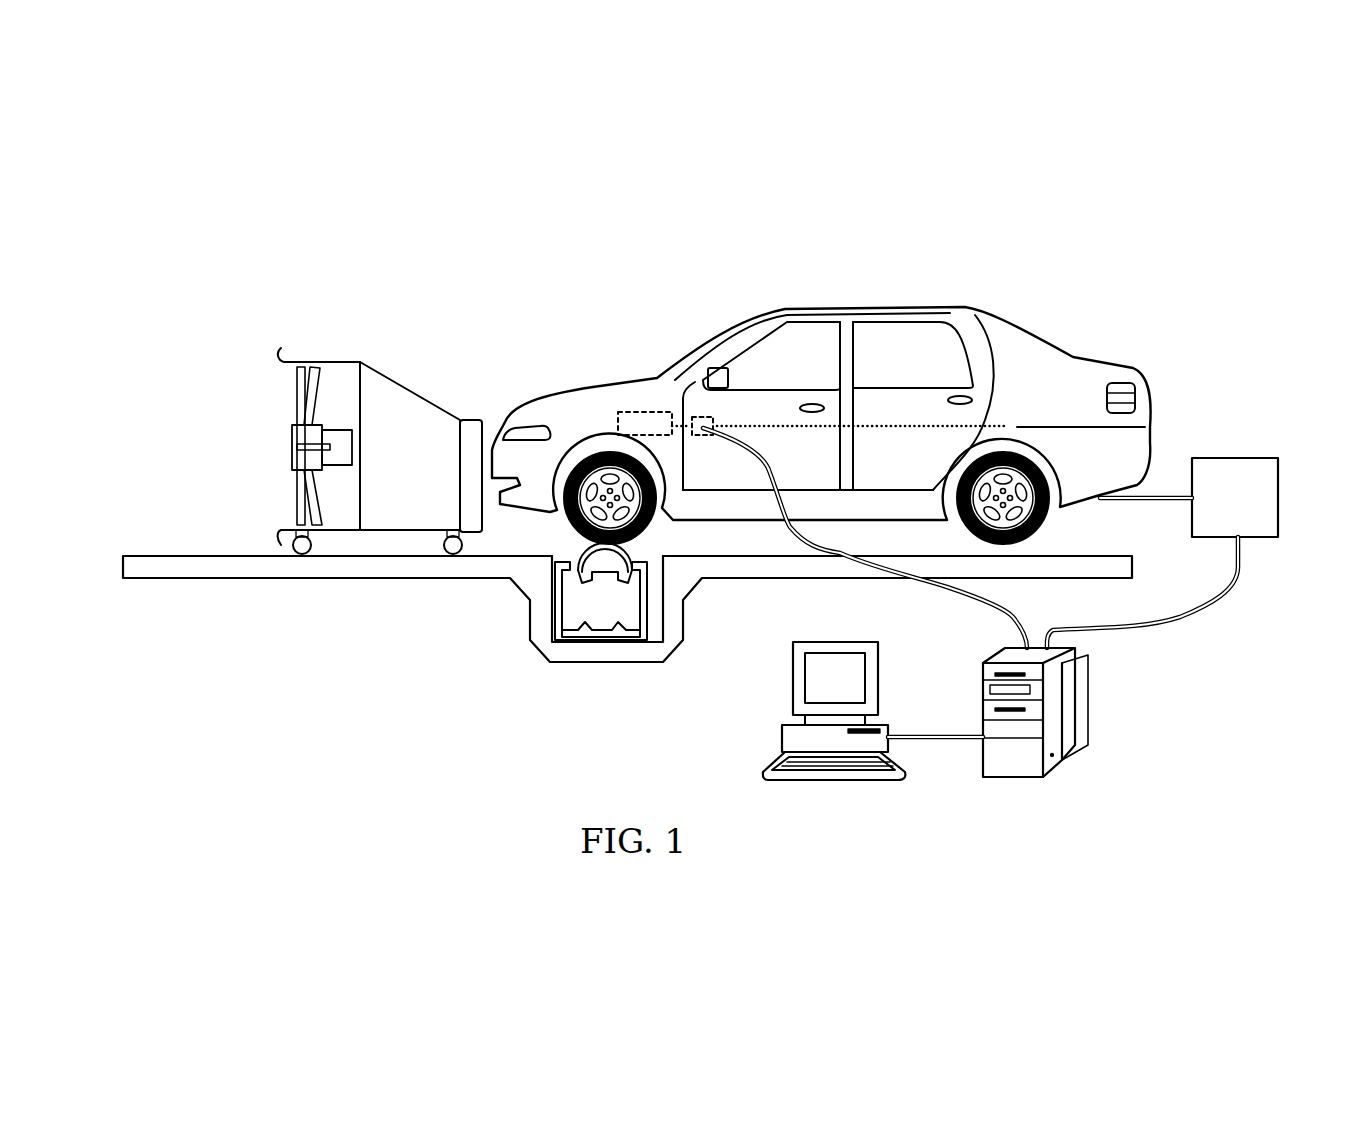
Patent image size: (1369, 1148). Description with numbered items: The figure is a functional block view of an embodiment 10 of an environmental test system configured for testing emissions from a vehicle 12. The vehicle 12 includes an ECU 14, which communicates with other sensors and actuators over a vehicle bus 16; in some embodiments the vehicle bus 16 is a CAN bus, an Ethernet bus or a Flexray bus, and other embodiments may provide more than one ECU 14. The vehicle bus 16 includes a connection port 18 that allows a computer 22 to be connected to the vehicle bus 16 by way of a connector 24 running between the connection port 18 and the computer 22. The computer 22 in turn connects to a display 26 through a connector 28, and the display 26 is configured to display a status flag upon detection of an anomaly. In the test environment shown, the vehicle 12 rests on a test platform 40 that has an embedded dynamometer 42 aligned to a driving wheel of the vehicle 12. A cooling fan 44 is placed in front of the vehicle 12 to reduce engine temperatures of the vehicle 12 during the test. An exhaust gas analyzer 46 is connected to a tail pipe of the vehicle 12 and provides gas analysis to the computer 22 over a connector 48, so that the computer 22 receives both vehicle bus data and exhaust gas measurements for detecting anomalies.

The environmental test system 10 is at (1025, 195).
The vehicle 12 is at (1039, 395).
The ECU 14 is at (658, 435).
The vehicle bus 16 is at (897, 426).
The connection port 18 is at (701, 433).
The computer 22 is at (1024, 765).
The connector 24 is at (947, 590).
The display 26 is at (848, 688).
The connector 28 is at (951, 735).
The test platform 40 is at (776, 578).
The dynamometer 42 is at (617, 613).
The cooling fan 44 is at (427, 461).
The exhaust gas analyzer 46 is at (1250, 505).
The connector 48 is at (1178, 618).